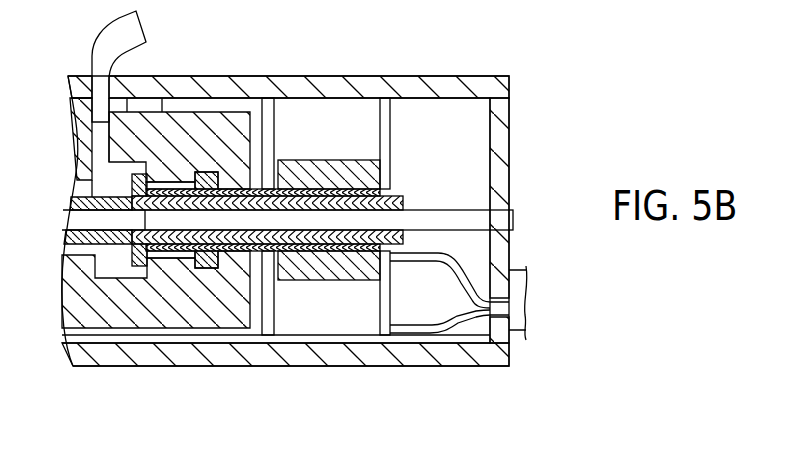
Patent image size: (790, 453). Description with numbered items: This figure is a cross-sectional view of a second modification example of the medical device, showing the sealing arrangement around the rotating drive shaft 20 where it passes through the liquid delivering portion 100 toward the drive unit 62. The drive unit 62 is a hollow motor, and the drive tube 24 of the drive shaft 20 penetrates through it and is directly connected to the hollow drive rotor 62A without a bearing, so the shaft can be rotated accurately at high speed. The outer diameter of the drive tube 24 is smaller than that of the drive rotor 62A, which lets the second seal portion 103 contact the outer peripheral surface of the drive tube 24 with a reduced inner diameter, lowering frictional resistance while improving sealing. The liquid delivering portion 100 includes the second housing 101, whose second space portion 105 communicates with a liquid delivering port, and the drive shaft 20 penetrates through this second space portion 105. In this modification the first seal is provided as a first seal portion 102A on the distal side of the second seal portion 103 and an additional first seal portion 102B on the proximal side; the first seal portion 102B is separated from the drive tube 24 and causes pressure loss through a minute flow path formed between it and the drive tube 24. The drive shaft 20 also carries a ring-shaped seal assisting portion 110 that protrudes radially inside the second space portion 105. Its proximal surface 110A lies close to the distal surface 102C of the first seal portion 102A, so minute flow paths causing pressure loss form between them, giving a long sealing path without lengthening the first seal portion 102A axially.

The drive shaft 20 is at (401, 75).
The drive tube 24 is at (302, 190).
The drive unit 62 is at (320, 167).
The hollow drive rotor 62A is at (358, 188).
The liquid delivering portion 100 is at (259, 318).
The second housing 101 is at (238, 333).
The first seal portion 102A is at (178, 182).
The first seal portion 102B is at (236, 184).
The distal surface 102C is at (124, 181).
The second seal portion 103 is at (207, 270).
The second space portion 105 is at (84, 223).
The seal assisting portion 110 is at (140, 268).
The proximal surface 110A is at (154, 262).